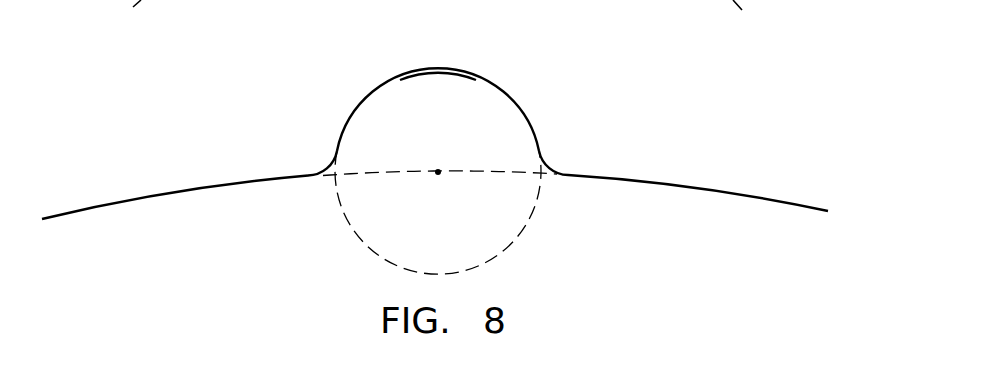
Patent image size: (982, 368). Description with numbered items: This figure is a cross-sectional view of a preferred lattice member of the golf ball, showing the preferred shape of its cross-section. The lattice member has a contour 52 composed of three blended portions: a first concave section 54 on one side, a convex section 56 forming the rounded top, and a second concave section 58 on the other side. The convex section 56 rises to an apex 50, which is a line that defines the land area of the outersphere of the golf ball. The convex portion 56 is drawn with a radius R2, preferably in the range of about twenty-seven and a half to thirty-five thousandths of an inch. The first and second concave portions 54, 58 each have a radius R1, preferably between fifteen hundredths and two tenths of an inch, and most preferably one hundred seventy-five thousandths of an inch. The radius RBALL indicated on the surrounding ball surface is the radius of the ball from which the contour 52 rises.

The apex 50 is at (507, 93).
The contour 52 is at (295, 176).
The first concave section 54 is at (333, 132).
The convex section 56 is at (395, 77).
The second concave section 58 is at (574, 172).
The radius of the first and second concave portions R1 is at (318, 163).
The radius of the convex portion R2 is at (468, 74).
The ball radius RBALL is at (758, 199).